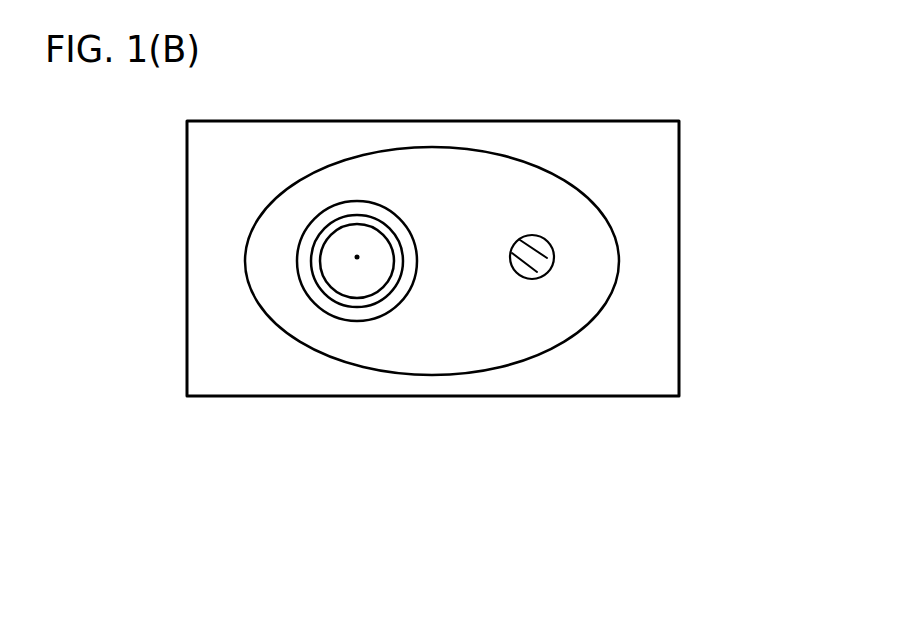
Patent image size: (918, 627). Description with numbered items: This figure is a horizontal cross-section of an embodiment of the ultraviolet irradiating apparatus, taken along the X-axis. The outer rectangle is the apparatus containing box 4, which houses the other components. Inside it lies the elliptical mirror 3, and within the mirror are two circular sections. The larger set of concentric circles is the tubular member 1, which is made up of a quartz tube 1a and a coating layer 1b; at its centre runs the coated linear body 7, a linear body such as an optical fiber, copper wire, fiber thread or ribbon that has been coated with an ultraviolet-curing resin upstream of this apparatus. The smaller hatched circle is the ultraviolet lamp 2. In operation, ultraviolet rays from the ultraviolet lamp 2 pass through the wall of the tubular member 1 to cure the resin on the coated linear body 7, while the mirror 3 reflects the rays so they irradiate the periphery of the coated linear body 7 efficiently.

The tubular member 1 is at (344, 384).
The quartz tube 1a is at (315, 307).
The coating layer 1b is at (343, 293).
The ultraviolet lamp 2 is at (535, 279).
The mirror 3 is at (608, 213).
The apparatus containing box 4 is at (555, 120).
The coated linear body 7 is at (353, 252).